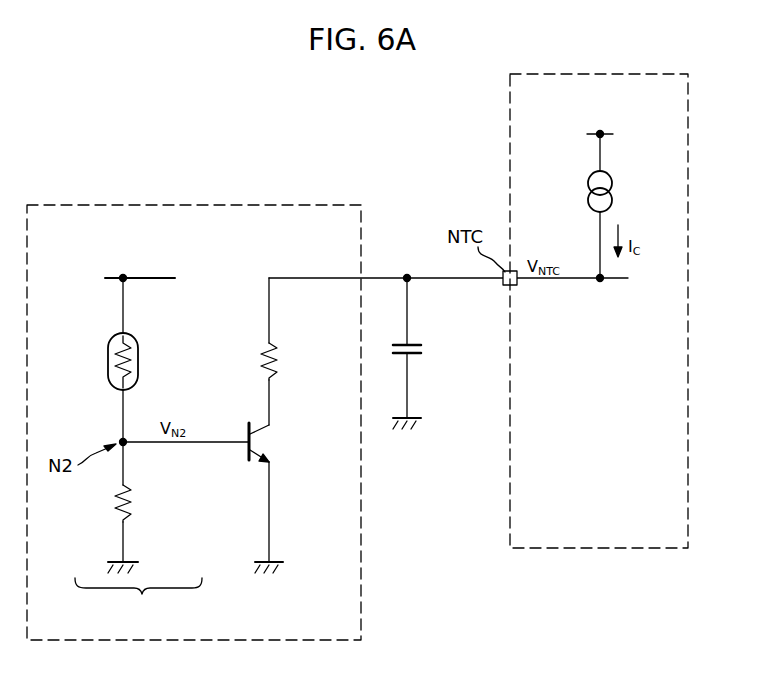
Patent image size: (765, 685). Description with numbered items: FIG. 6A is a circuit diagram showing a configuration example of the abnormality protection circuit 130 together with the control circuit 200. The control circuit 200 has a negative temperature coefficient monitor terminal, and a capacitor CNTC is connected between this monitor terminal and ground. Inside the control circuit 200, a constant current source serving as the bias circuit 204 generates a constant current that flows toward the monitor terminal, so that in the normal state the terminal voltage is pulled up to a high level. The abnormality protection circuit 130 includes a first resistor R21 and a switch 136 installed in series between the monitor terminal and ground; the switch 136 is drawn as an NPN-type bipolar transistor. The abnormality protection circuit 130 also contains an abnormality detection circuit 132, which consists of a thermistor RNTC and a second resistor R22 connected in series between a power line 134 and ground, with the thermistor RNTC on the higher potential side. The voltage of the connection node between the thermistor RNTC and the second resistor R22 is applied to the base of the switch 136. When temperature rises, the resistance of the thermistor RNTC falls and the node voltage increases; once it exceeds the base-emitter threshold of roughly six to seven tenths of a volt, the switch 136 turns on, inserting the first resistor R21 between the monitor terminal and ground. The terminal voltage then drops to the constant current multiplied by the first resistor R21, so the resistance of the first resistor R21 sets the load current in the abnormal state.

The abnormality protection circuit 130 is at (220, 205).
The power line 134 is at (163, 278).
The abnormality detection circuit 132 is at (138, 601).
The switch 136 is at (280, 440).
The control circuit 200 is at (580, 550).
The bias circuit 204 is at (615, 190).
The thermistor RNTC is at (140, 358).
The second resistor R22 is at (135, 505).
The first resistor R21 is at (282, 352).
The capacitor CNTC is at (423, 350).